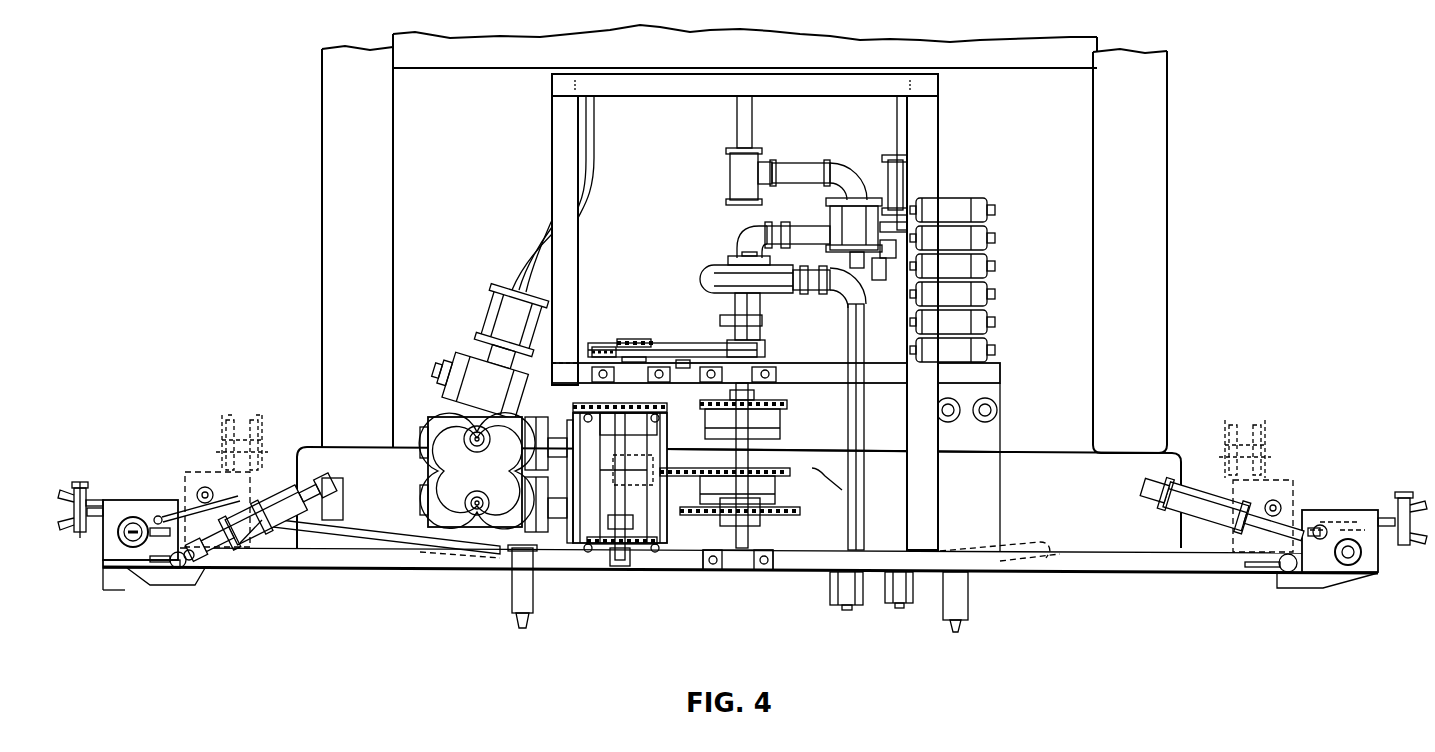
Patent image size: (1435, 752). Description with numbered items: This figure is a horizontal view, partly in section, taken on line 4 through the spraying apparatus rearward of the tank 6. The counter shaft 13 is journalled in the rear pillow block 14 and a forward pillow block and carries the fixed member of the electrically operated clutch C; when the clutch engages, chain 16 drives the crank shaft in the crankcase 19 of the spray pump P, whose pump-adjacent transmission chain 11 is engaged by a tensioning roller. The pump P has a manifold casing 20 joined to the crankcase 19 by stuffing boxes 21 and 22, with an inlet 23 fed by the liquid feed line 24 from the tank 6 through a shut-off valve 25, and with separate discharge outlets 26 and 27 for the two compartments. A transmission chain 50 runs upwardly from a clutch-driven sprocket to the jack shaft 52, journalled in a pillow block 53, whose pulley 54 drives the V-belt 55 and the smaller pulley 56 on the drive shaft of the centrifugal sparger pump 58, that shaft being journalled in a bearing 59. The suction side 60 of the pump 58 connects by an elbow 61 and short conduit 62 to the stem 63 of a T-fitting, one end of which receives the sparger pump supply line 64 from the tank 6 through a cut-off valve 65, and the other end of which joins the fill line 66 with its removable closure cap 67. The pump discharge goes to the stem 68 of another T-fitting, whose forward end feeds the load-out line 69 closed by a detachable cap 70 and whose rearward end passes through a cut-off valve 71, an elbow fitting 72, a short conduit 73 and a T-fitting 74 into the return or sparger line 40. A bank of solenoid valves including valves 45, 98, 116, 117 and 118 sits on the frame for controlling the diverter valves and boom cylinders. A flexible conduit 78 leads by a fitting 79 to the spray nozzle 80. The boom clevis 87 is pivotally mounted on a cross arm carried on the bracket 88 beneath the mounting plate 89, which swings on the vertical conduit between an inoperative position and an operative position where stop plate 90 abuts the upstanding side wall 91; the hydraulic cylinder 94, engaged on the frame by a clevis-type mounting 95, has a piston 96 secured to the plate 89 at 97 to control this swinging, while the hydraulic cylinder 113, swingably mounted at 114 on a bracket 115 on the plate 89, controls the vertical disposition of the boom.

The tank 6 is at (760, 59).
The liquid feed line 24 is at (599, 138).
The shut-off valve 25 is at (510, 318).
The discharge outlet 27 is at (470, 432).
The inlet 23 is at (428, 475).
The manifold casing 20 is at (445, 537).
The discharge outlet 26 is at (478, 515).
The pump stuffing box 22 is at (556, 437).
The spray pump P is at (580, 527).
The crankcase 19 is at (638, 552).
The transmission chain 50 is at (672, 490).
The pump stuffing box 21 is at (563, 532).
The V-belt 55 is at (672, 352).
The jack shaft 52 is at (611, 344).
The pulley 54 is at (630, 343).
The pillow block 53 is at (588, 370).
The pulley 56 is at (760, 342).
The bearing 59 is at (730, 330).
The counter shaft 13 is at (748, 460).
The chain 16 is at (764, 422).
The electrically operated clutch C is at (757, 445).
The transmission chain 11 is at (778, 516).
The rear pillow block 14 is at (738, 571).
The return or sparger line 40 is at (736, 121).
The T-fitting 74 is at (738, 170).
The short conduit 73 is at (793, 178).
The elbow fitting 72 is at (846, 170).
The cut-off valve 71 is at (856, 220).
The short conduit 62 is at (805, 232).
The elbow 61 is at (742, 236).
The suction side 60 is at (722, 260).
The sparger pump 58 is at (700, 278).
The stem 68 is at (832, 300).
The stem 63 is at (886, 248).
The load-out line 69 is at (847, 347).
The sparger pump supply line 64 is at (905, 118).
The cut-off valve 65 is at (900, 180).
The fill line 66 is at (905, 500).
The solenoid valve 118 is at (983, 208).
The solenoid valve 117 is at (983, 236).
The solenoid valve 116 is at (983, 263).
The section line 4 is at (1028, 264).
The solenoid valve 98 is at (985, 292).
The solenoid valve 45 is at (985, 321).
The detachable cap 70 is at (855, 606).
The removable closure cap 67 is at (906, 604).
The fitting 79 is at (512, 568).
The spray nozzle 80 is at (516, 618).
The flexible conduit 78 is at (370, 535).
The bracket 88 is at (108, 563).
The hydraulic cylinder 113 is at (133, 516).
The piston attachment 97 is at (160, 514).
The hydraulic cylinder 94 is at (252, 498).
The clevis-type mounting 95 is at (336, 482).
The piston 96 is at (200, 490).
The clevis 87 is at (72, 534).
The mounting plate 89 is at (103, 500).
The upstanding side wall 91 is at (118, 575).
The bracket 115 is at (147, 582).
The swing mounting 114 is at (130, 580).
The stop plate 90 is at (180, 580).